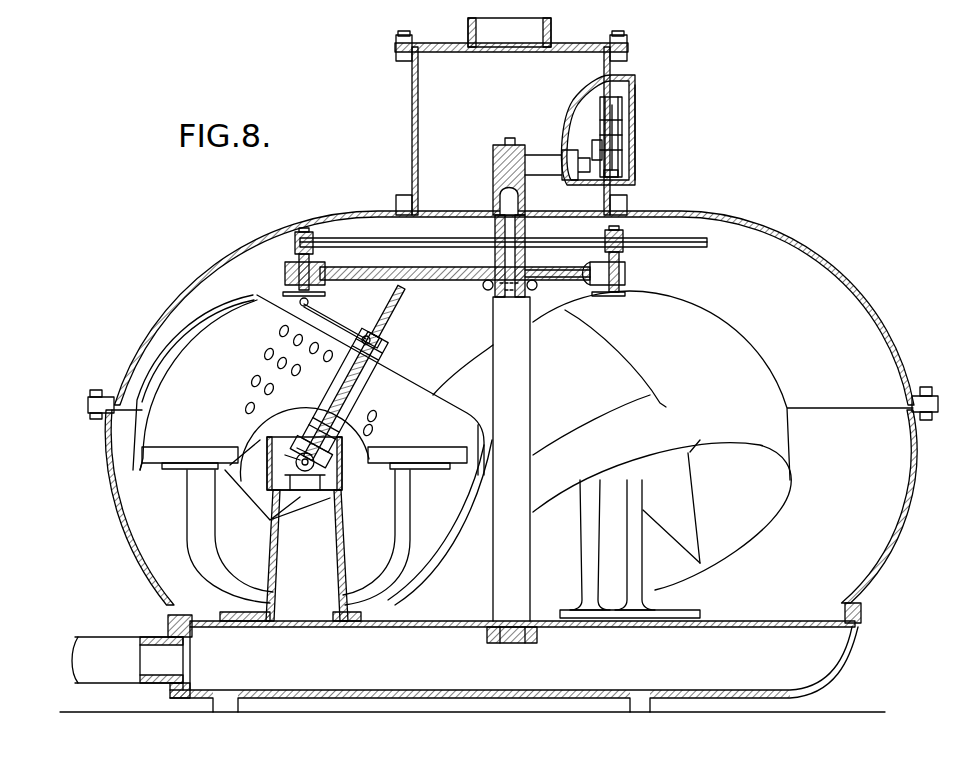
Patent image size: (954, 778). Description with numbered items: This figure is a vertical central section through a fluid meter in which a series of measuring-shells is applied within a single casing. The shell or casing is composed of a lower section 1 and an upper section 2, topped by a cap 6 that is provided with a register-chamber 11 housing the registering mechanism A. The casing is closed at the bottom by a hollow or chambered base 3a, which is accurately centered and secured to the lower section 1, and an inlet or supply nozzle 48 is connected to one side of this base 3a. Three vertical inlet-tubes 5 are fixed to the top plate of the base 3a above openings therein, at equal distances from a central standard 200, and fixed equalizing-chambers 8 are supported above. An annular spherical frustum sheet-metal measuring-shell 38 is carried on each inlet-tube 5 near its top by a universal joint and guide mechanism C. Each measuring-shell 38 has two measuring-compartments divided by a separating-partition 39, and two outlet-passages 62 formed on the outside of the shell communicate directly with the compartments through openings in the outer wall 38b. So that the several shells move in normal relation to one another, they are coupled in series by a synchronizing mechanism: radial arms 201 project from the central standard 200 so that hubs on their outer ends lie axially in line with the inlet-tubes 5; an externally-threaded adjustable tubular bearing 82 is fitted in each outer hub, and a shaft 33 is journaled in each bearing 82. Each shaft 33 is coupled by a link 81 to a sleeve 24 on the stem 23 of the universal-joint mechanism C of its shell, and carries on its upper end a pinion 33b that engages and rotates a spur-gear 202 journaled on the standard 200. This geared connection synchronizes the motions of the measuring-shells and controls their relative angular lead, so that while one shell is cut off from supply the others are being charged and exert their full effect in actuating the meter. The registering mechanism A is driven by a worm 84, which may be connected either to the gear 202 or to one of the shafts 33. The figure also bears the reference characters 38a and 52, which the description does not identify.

The lower section 1 is at (501, 523).
The upper section 2 is at (513, 315).
The chambered base 3a is at (472, 666).
The inlet-tube 5 is at (582, 547).
The cap 6 is at (511, 123).
The equalizing-chamber 8 is at (304, 453).
The register-chamber 11 is at (598, 130).
The stem 23 is at (341, 397).
The sleeve 24 is at (388, 349).
The shaft 33 is at (322, 294).
The pinion 33b is at (295, 247).
The measuring-shell 38 is at (178, 493).
The impeller portion 38a is at (680, 485).
The outer wall 38b is at (160, 395).
The separating-partition 39 is at (462, 501).
The inlet or supply nozzle 48 is at (127, 660).
The box 52 is at (509, 32).
The outlet-passage 62 is at (186, 343).
The link 81 is at (337, 324).
The adjustable tubular bearing 82 is at (285, 275).
The worm 84 is at (493, 176).
The central standard 200 is at (510, 429).
The radial arm 201 is at (322, 281).
The spur-gear 202 is at (503, 231).
The registering mechanism A is at (640, 128).
The universal joint and guide mechanism C is at (304, 449).